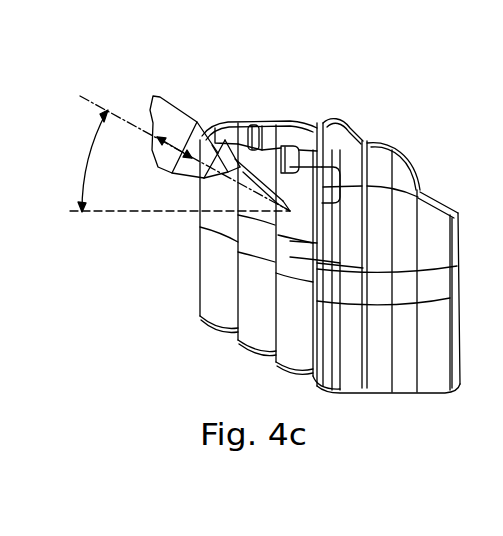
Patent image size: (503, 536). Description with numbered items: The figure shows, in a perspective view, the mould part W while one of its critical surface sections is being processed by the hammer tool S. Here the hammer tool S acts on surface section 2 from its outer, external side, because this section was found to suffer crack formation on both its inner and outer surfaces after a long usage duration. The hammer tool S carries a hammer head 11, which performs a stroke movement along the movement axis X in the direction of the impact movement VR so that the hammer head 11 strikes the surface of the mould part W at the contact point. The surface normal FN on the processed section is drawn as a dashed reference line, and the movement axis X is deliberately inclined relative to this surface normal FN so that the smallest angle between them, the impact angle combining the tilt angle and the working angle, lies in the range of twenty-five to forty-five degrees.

The surface section 2 is at (308, 184).
The hammer head 11 is at (290, 213).
The mould part W is at (393, 398).
The hammer tool S is at (187, 128).
The movement axis X is at (82, 98).
The impact movement direction VR is at (132, 33).
The surface normal FN is at (132, 212).